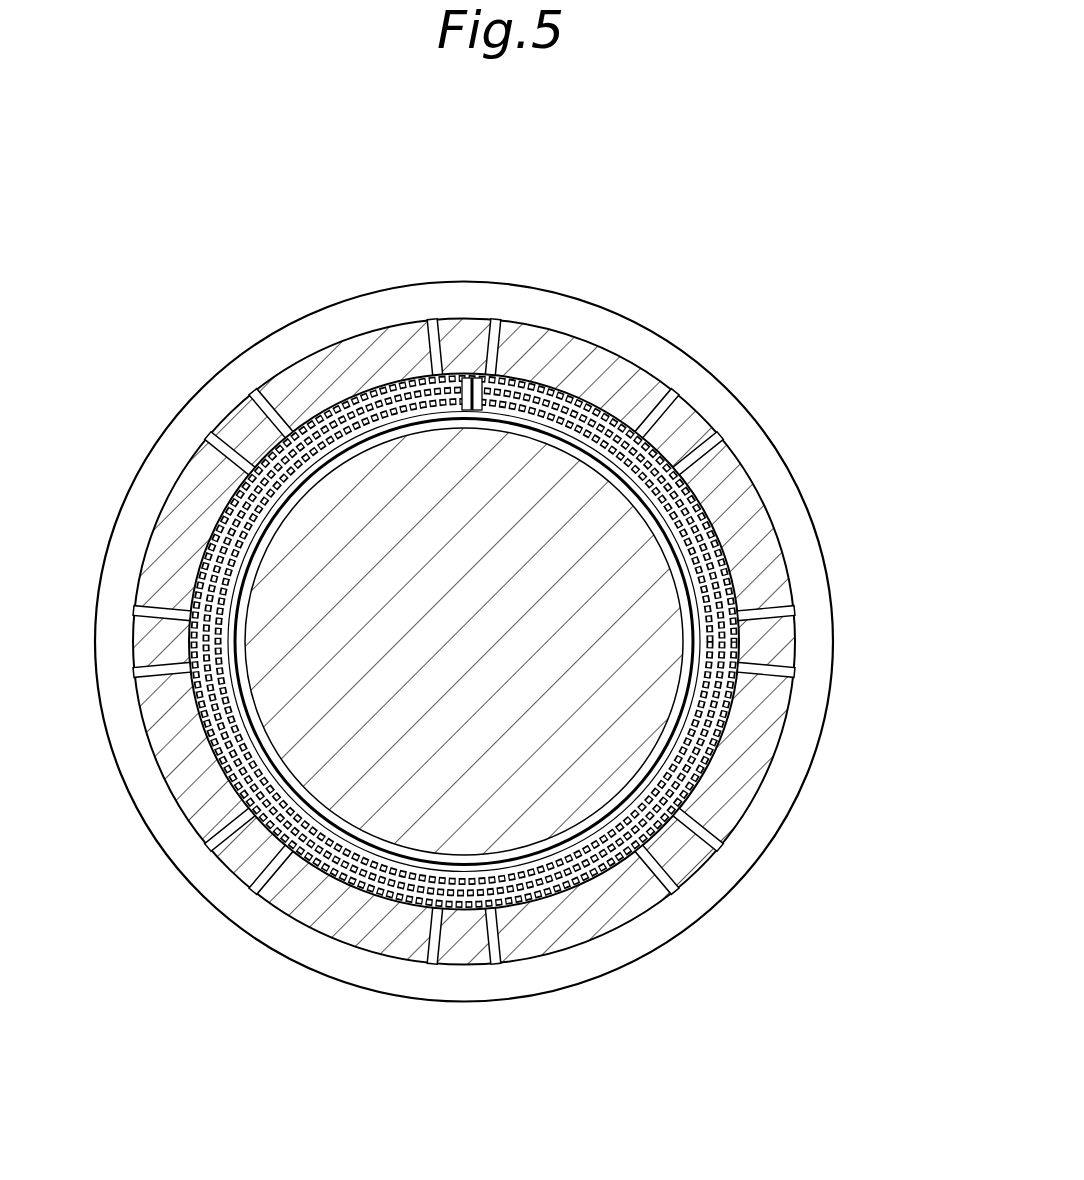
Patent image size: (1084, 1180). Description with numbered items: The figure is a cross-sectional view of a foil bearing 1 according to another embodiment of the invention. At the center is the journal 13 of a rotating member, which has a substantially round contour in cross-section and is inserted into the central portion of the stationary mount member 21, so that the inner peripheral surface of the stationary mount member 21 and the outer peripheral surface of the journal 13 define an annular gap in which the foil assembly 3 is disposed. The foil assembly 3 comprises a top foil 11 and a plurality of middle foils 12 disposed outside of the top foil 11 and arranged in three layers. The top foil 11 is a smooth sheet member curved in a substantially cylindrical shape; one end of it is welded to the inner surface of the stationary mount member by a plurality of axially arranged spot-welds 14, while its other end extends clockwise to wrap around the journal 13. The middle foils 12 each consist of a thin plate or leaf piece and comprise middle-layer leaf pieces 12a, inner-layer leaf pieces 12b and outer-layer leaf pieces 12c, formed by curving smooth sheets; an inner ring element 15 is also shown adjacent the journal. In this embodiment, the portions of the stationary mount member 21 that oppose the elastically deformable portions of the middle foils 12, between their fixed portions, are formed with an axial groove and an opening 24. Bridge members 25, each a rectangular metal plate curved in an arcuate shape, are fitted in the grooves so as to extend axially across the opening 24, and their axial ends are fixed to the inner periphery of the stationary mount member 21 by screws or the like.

The motor 1 is at (695, 291).
The foil assembly 3 is at (523, 742).
The top foil 11 is at (621, 849).
The middle foils 12 is at (464, 742).
The middle-layer leaf pieces 12a is at (667, 1022).
The inner-layer leaf pieces 12b is at (528, 880).
The outer-layer leaf pieces 12c is at (592, 865).
The journal 13 is at (193, 732).
The spot-welds 14 is at (487, 388).
The inner ring 15 is at (295, 857).
The stationary mount member 21 is at (727, 403).
The opening 24 is at (786, 675).
The bridge members 25 is at (757, 770).